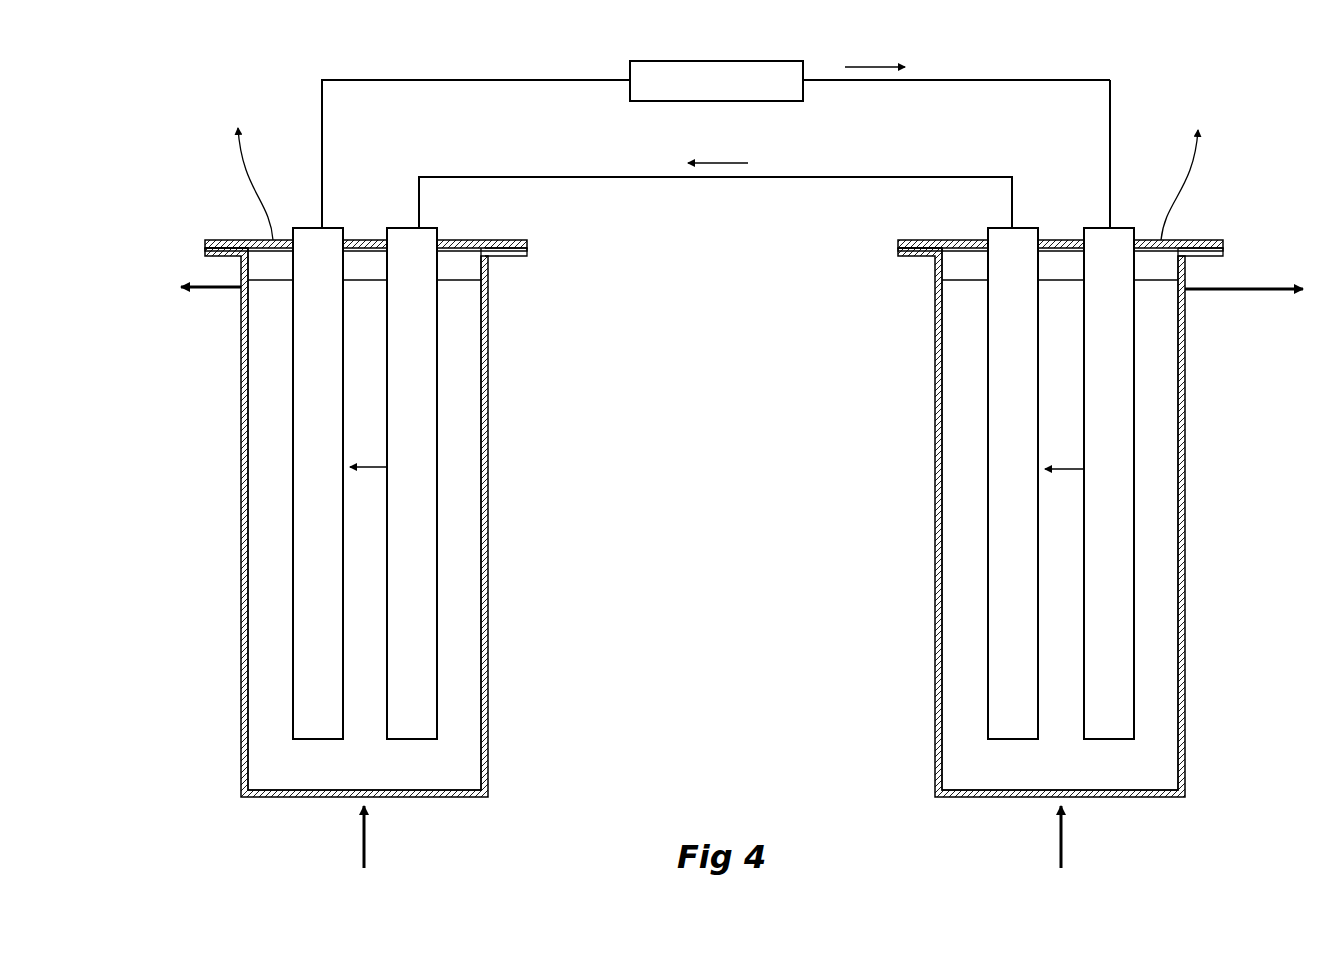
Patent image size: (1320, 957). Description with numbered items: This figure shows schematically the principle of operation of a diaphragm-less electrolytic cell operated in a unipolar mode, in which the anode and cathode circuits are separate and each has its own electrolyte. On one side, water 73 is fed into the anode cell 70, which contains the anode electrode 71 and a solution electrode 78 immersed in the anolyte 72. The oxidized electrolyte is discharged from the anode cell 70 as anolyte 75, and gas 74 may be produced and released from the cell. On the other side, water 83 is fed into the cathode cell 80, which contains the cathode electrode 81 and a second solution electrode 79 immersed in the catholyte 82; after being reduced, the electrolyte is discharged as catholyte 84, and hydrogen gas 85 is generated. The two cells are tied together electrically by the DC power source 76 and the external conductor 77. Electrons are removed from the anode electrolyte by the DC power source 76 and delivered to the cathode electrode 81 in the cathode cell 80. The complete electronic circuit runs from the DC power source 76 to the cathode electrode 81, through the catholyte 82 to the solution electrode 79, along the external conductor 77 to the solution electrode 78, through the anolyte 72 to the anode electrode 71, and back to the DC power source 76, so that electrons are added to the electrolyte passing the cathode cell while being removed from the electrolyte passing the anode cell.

The anode cell 70 is at (241, 438).
The anode electrode 71 is at (293, 600).
The anolyte 72 is at (283, 760).
The water 73 is at (362, 826).
The gas 74 is at (250, 183).
The anolyte 75 is at (195, 287).
The DC power source 76 is at (762, 61).
The external conductor 77 is at (818, 177).
The solution electrode 78 is at (437, 490).
The solution electrode 79 is at (988, 480).
The cathode cell 80 is at (1185, 440).
The cathode electrode 81 is at (1134, 600).
The catholyte 82 is at (1148, 760).
The water 83 is at (1063, 826).
The catholyte 84 is at (1238, 288).
The hydrogen gas 85 is at (1183, 185).